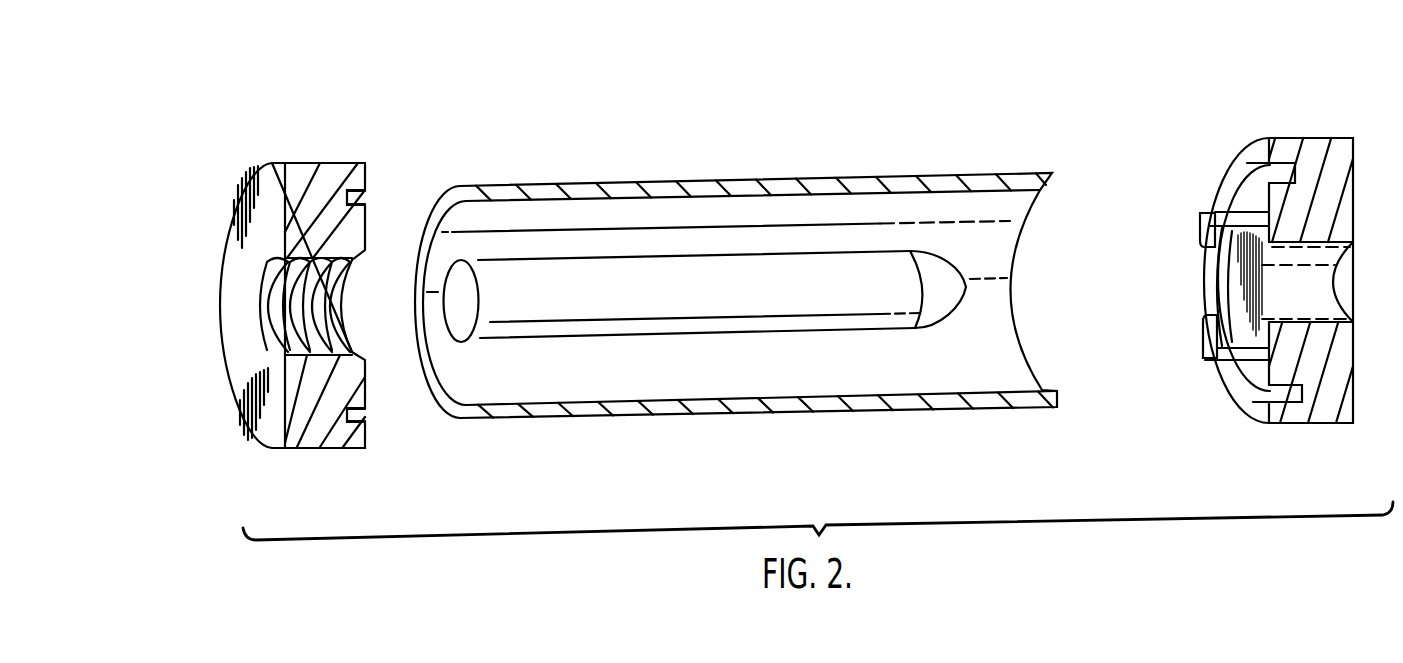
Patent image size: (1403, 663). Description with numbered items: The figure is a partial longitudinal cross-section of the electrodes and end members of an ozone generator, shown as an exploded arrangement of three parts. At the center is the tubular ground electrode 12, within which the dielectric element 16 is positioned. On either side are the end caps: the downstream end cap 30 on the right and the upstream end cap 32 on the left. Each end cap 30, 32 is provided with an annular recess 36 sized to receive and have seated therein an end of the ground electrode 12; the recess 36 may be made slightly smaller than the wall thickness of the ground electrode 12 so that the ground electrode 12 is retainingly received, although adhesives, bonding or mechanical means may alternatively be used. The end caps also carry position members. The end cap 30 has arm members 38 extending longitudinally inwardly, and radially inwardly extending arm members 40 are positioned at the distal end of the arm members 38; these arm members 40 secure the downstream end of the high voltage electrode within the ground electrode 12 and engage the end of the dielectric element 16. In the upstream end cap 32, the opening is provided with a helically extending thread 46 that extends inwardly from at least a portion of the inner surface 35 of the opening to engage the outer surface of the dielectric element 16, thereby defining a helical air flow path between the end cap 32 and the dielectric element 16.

The ground electrode 12 is at (729, 166).
The dielectric element 16 is at (684, 302).
The end cap 30 is at (1313, 132).
The upstream end cap 32 is at (305, 161).
The inner surface 35 is at (280, 340).
The annular recess 36 is at (362, 200).
The arm members 38 is at (1217, 213).
The radially inwardly extending arm members 40 is at (1193, 227).
The helically extending thread 46 is at (328, 302).